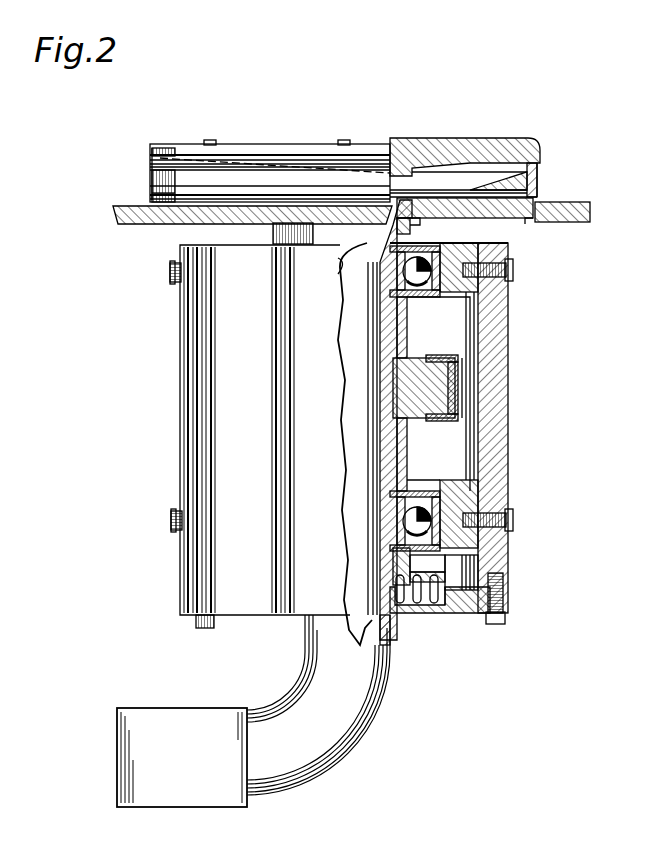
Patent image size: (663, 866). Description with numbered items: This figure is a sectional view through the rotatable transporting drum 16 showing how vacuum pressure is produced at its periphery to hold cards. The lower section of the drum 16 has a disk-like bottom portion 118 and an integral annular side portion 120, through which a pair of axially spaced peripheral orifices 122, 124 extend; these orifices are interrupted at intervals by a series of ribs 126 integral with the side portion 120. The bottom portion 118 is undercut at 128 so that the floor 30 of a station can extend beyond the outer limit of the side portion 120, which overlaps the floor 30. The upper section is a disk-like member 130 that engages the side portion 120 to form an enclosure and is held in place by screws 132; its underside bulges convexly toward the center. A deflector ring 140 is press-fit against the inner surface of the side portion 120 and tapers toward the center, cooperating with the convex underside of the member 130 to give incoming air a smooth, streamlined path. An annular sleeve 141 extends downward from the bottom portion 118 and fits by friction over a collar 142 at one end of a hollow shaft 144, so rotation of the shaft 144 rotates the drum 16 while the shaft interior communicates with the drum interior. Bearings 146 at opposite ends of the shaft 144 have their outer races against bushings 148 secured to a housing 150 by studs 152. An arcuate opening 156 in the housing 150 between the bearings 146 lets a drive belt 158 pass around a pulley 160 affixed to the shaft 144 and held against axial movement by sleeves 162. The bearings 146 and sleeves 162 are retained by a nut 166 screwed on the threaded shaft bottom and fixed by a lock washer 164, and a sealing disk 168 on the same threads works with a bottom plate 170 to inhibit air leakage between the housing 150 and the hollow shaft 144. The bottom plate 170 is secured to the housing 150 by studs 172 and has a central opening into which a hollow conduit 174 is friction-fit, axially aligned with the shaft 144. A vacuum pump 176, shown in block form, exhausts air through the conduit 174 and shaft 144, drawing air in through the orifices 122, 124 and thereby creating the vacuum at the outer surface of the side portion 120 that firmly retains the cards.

The drum 16 is at (458, 127).
The floor 30 is at (130, 220).
The disk-like bottom portion 118 is at (468, 208).
The annular side portion 120 is at (530, 182).
The peripheral orifice 122 is at (280, 191).
The peripheral orifice 124 is at (305, 163).
The ribs 126 is at (248, 163).
The undercut 128 is at (513, 220).
The disk-like member 130 is at (157, 150).
The screws 132 is at (206, 143).
The deflector ring 140 is at (480, 160).
The annular sleeve 141 is at (420, 222).
The collar 142 is at (411, 234).
The hollow shaft 144 is at (404, 312).
The bearings 146 is at (400, 275).
The bushings 148 is at (482, 280).
The housing 150 is at (492, 432).
The studs 152 is at (170, 270).
The arcuate opening 156 is at (462, 397).
The drive belt 158 is at (458, 382).
The pulley 160 is at (442, 358).
The sleeves 162 is at (403, 342).
The lock washer 164 is at (398, 560).
The nut 166 is at (412, 566).
The sealing disk 168 is at (452, 576).
The bottom plate 170 is at (466, 613).
The studs 172 is at (506, 612).
The hollow conduit 174 is at (372, 680).
The vacuum pump 176 is at (238, 710).